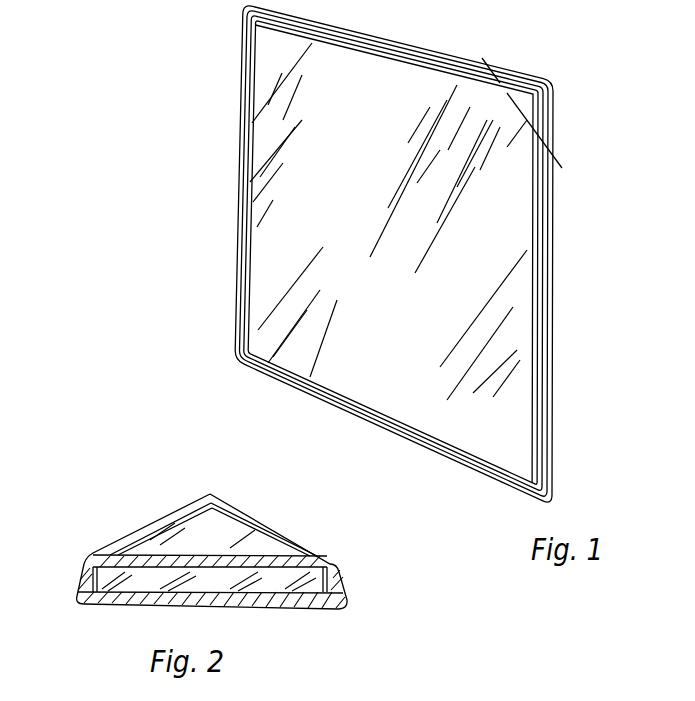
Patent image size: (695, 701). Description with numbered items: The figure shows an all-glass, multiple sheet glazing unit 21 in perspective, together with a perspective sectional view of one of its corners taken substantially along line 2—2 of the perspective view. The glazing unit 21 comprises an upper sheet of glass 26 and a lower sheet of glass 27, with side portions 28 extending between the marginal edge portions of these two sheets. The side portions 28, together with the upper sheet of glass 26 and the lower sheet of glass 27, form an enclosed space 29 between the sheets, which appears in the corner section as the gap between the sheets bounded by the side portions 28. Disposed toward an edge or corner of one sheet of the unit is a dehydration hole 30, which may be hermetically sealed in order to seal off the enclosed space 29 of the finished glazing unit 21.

In FIG. 1, the all-glass, multiple sheet glazing unit 21 is at (233, 150).
In FIG. 1, the upper sheet of glass 26 is at (307, 222).
In FIG. 2, the upper sheet of glass 26 is at (227, 550).
In FIG. 2, the lower sheet of glass 27 is at (136, 588).
In FIG. 1, the side portions 28 is at (430, 66).
In FIG. 2, the side portions 28 is at (85, 583).
In FIG. 2, the enclosed space 29 is at (215, 581).
In FIG. 1, the dehydration hole 30 is at (290, 35).
In FIG. 1, the line 2— 2 is at (482, 58).